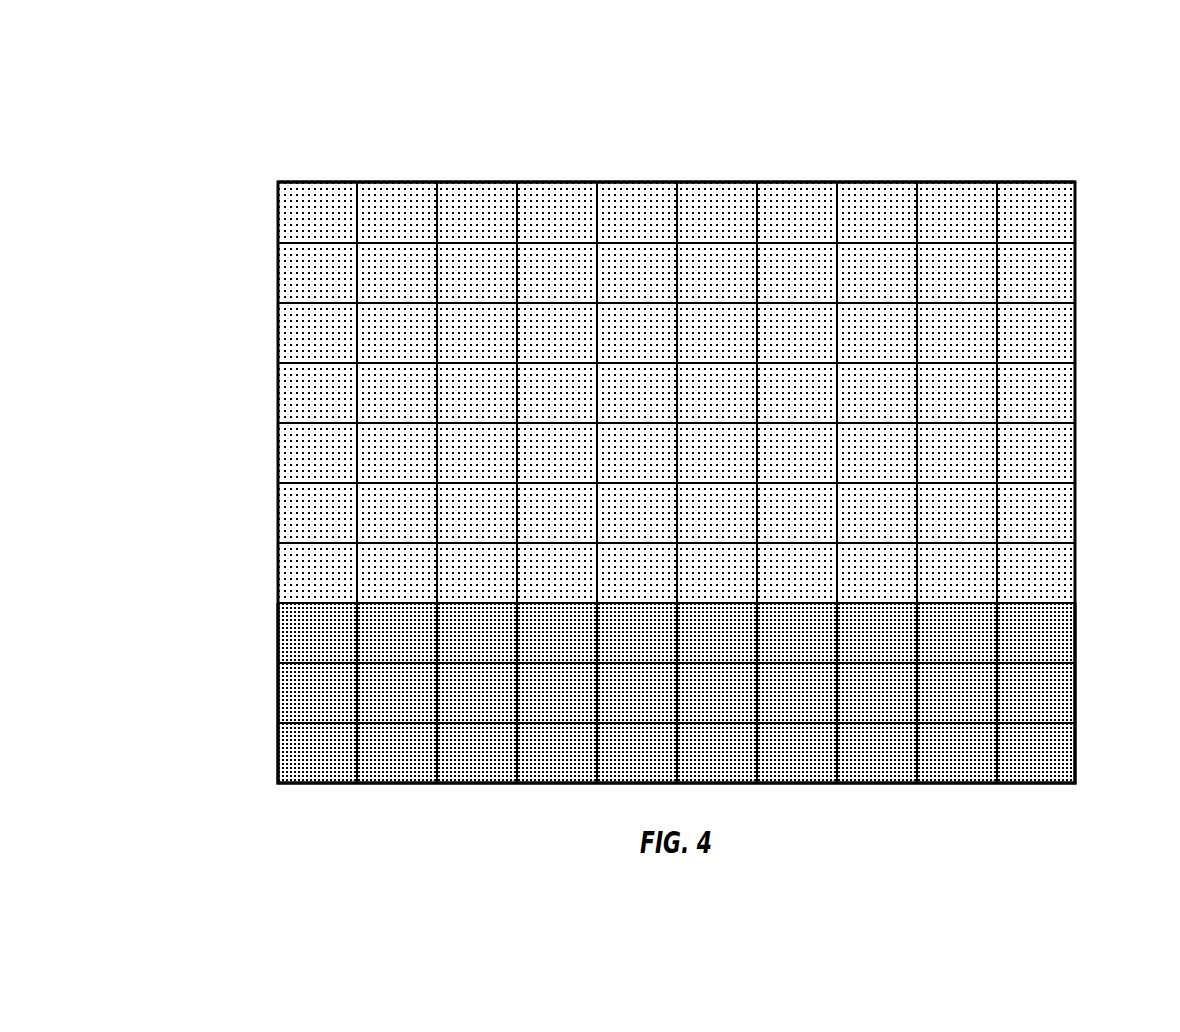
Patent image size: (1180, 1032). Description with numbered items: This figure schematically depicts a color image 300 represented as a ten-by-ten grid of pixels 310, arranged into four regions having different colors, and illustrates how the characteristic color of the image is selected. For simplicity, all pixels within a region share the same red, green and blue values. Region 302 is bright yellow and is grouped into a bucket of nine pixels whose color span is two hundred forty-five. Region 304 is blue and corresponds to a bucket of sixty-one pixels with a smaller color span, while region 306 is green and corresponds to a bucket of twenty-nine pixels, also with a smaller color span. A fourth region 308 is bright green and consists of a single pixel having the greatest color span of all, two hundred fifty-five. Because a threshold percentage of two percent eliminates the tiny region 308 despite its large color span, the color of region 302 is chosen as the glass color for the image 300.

The color image 300 is at (1067, 103).
The region 302 is at (480, 270).
The region 304 is at (800, 200).
The region 306 is at (303, 745).
The region 308 is at (1052, 623).
The pixels 310 is at (400, 202).